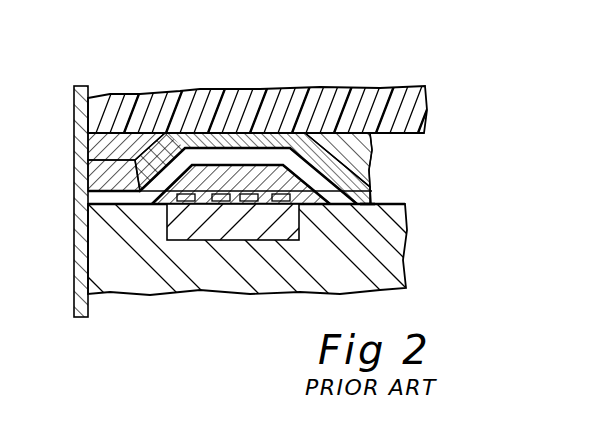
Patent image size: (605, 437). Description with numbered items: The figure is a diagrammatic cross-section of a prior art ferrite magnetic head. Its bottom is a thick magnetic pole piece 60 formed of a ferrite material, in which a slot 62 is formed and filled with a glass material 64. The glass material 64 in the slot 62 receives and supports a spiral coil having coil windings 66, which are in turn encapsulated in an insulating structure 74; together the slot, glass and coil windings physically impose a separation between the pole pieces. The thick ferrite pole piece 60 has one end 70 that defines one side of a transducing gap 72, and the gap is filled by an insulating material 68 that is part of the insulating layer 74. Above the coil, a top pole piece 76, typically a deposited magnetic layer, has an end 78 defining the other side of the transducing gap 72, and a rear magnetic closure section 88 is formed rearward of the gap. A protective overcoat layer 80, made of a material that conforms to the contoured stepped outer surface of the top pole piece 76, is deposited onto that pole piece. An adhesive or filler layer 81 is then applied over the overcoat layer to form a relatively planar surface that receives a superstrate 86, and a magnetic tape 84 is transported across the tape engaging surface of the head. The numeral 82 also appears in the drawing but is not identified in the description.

The thick magnetic pole piece 60 is at (123, 283).
The slot 62 is at (275, 230).
The glass material 64 is at (203, 230).
The coil windings 66 is at (305, 189).
The insulating material 68 is at (132, 203).
The end of the thick ferrite pole piece 70 is at (118, 204).
The transducing gap 72 is at (103, 196).
The insulating structure 74 is at (268, 178).
The top pole piece 76 is at (230, 153).
The end of the top pole piece 78 is at (122, 173).
The protective overcoat layer 80 is at (177, 140).
The adhesive or filler layer 81 is at (84, 112).
The spacer region 82 is at (325, 188).
The magnetic tape 84 is at (76, 150).
The superstrate 86 is at (117, 100).
The rear magnetic closure section 88 is at (365, 205).